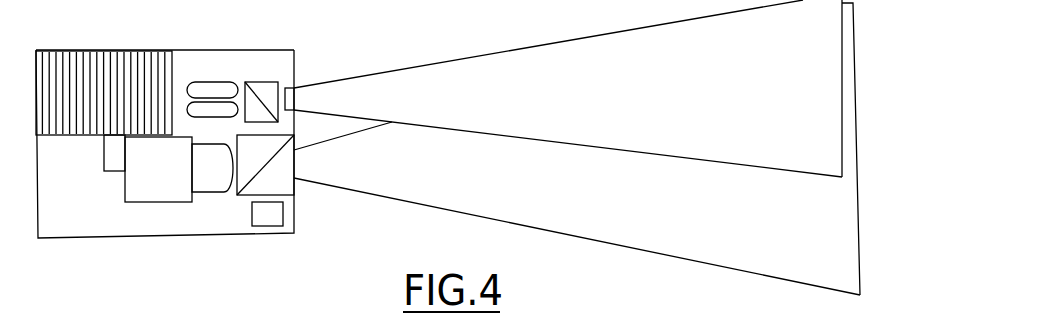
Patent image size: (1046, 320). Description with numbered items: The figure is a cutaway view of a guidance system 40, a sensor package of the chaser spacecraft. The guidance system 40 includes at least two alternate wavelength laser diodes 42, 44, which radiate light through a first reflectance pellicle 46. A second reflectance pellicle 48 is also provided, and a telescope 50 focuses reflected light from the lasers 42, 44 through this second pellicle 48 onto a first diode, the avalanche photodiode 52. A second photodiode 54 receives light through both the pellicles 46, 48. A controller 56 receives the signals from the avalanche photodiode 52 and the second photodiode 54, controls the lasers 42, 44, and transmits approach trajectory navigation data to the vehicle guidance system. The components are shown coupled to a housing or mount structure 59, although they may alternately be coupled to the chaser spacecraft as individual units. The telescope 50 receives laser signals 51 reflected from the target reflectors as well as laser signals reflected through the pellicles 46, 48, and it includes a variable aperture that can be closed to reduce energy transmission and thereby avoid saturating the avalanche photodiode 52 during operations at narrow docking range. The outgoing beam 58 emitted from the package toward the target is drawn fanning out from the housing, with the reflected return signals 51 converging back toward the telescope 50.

The guidance system 40 is at (98, 51).
The laser diode 42 is at (208, 82).
The laser diode 44 is at (219, 118).
The first reflectance pellicle 46 is at (278, 81).
The second reflectance pellicle 48 is at (296, 188).
The telescope 50 is at (222, 193).
The laser signals 51 is at (470, 216).
The avalanche photodiode 52 is at (125, 191).
The second photodiode 54 is at (265, 227).
The controller 56 is at (36, 70).
The projected light beam 58 is at (468, 58).
The housing or mount structure 59 is at (266, 48).